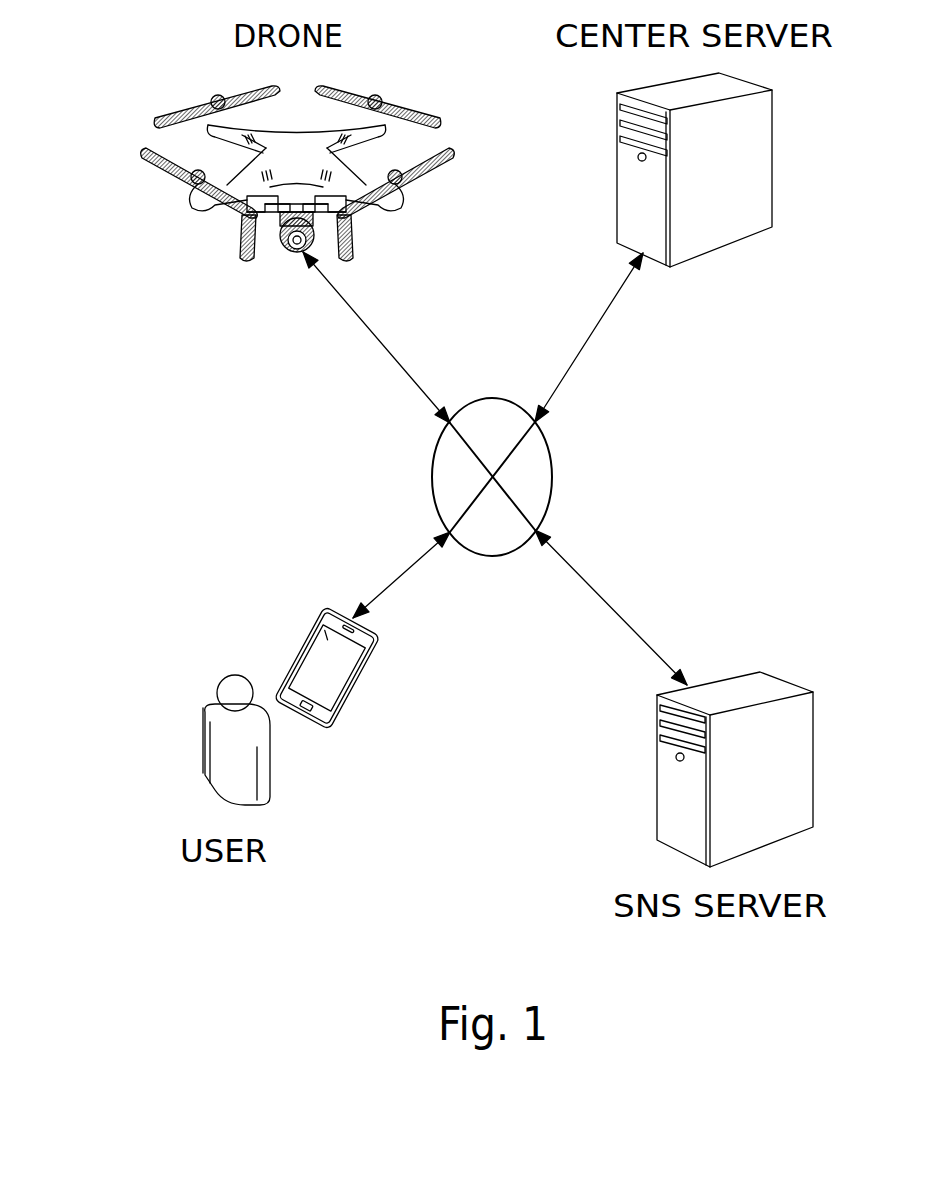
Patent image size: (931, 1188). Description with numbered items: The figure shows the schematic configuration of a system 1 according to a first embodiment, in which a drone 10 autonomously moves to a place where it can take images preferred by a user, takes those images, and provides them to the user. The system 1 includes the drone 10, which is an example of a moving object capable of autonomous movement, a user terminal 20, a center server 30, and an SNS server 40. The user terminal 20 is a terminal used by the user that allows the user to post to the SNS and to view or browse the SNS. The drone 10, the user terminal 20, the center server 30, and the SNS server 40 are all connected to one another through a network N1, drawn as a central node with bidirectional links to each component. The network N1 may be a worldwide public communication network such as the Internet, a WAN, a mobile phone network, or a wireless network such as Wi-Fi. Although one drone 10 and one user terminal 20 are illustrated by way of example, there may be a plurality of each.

The system 1 is at (695, 402).
The drone 10 is at (187, 107).
The user terminal 20 is at (314, 627).
The center server 30 is at (632, 178).
The SNS server 40 is at (673, 777).
The network N1 is at (525, 543).